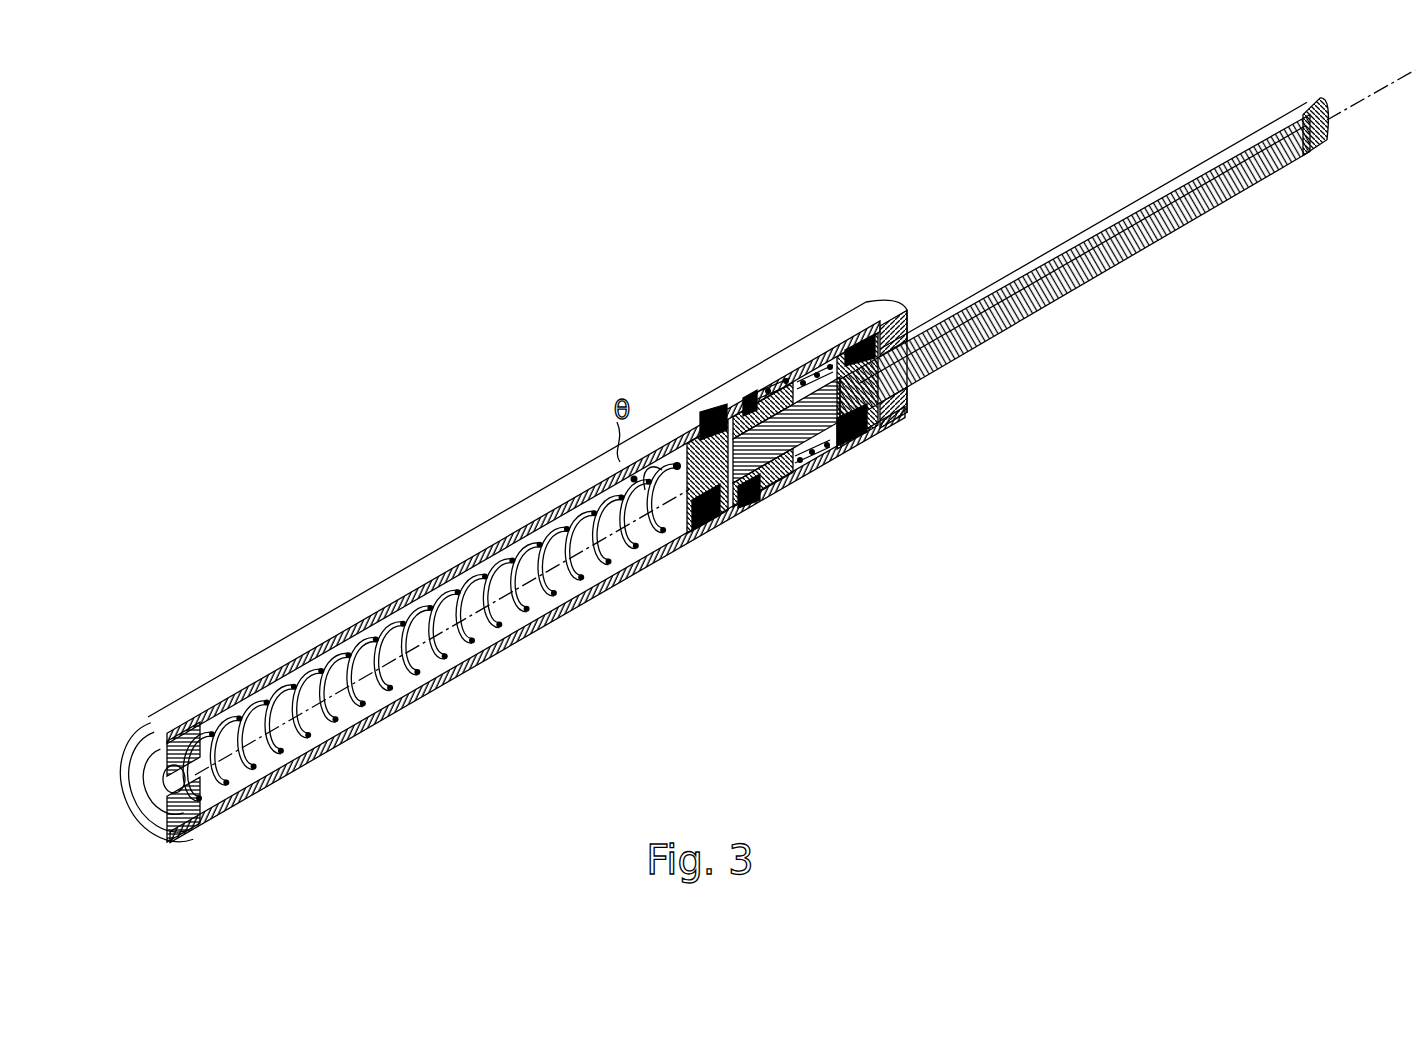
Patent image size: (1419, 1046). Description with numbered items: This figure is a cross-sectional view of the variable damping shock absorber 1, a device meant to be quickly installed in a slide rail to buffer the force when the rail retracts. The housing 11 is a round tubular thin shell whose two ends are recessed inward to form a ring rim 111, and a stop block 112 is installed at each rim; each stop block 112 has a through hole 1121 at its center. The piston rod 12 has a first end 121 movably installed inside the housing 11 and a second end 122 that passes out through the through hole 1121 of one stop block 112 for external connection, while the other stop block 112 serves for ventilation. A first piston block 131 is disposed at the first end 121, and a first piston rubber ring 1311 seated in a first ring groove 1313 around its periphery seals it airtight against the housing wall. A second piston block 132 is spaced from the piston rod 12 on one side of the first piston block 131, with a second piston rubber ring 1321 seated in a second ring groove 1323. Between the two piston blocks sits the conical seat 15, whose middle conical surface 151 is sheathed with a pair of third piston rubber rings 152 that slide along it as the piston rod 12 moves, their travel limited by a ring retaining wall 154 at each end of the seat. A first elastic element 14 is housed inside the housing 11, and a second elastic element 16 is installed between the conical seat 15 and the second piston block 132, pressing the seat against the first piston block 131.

The variable damping shock absorber 1 is at (179, 183).
The housing 11 is at (232, 690).
The ring rim 111 is at (150, 808).
The stop block 112 is at (183, 725).
The through hole 1121 is at (172, 777).
The piston rod 12 is at (977, 330).
The first end 121 is at (677, 465).
The second end 122 is at (1320, 103).
The first piston block 131 is at (690, 543).
The first piston rubber ring 1311 is at (710, 533).
The first ring groove 1313 is at (722, 528).
The second piston block 132 is at (832, 445).
The second piston rubber ring 1321 is at (853, 335).
The second ring groove 1323 is at (885, 430).
The first elastic element 14 is at (435, 575).
The conical seat 15 is at (800, 500).
The conical surface 151 is at (750, 513).
The third piston rubber ring 152 is at (738, 520).
The ring retaining wall 154 is at (773, 385).
The second elastic element 16 is at (803, 365).